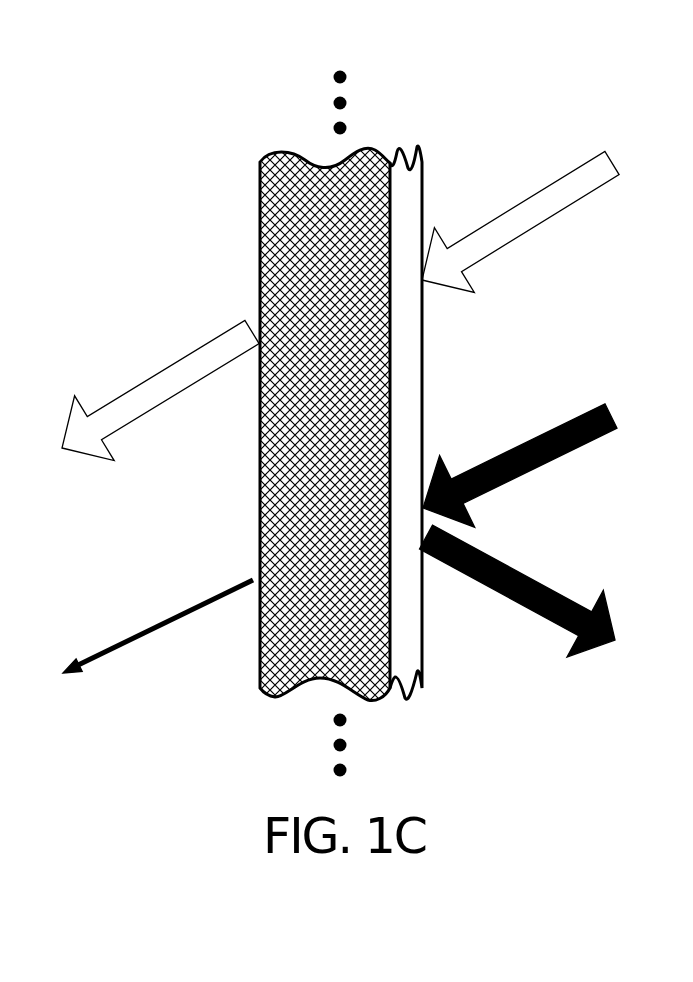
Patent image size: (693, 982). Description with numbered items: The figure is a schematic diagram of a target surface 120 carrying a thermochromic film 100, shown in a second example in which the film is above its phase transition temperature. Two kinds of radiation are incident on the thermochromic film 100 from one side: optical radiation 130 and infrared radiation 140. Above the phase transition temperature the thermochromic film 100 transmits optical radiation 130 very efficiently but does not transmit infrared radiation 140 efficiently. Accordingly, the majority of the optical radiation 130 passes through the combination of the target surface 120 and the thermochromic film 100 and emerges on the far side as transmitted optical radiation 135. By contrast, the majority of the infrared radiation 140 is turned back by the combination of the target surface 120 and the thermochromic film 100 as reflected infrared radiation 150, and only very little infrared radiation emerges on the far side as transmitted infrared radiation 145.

The thermochromic film 100 is at (427, 151).
The target surface 120 is at (256, 152).
The optical radiation 130 is at (542, 227).
The transmitted optical radiation 135 is at (183, 340).
The infrared radiation 140 is at (548, 472).
The transmitted infrared radiation 145 is at (161, 602).
The reflected infrared radiation 150 is at (527, 632).